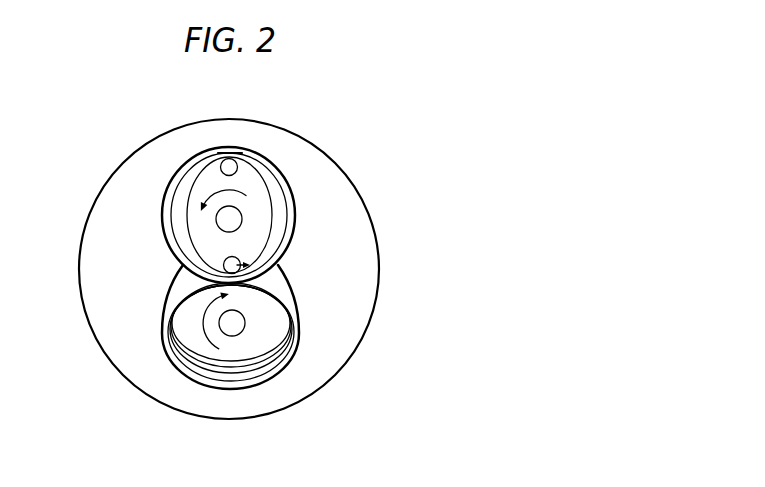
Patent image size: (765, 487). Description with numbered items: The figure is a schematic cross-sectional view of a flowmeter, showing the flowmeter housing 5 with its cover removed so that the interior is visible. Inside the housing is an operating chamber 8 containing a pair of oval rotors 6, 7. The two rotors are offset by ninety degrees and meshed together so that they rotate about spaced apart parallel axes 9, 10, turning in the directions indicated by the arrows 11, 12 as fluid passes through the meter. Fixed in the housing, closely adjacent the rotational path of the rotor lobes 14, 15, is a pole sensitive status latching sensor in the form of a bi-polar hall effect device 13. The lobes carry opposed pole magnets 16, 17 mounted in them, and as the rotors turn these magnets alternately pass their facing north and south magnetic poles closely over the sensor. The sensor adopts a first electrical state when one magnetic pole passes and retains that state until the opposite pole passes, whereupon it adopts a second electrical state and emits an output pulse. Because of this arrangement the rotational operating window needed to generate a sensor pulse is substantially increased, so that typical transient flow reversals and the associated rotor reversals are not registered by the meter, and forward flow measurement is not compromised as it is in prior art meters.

The flowmeter housing 5 is at (327, 169).
The oval rotor 6 is at (252, 228).
The oval rotor 7 is at (270, 333).
The operating chamber 8 is at (283, 243).
The axis 9 is at (225, 219).
The axis 10 is at (237, 328).
The arrow 11 is at (210, 192).
The arrow 12 is at (200, 330).
The bi-polar hall effect device 13 is at (280, 268).
The rotor lobe 14 is at (242, 166).
The rotor lobe 15 is at (183, 269).
The opposed pole magnet 16 is at (231, 160).
The opposed pole magnet 17 is at (190, 275).